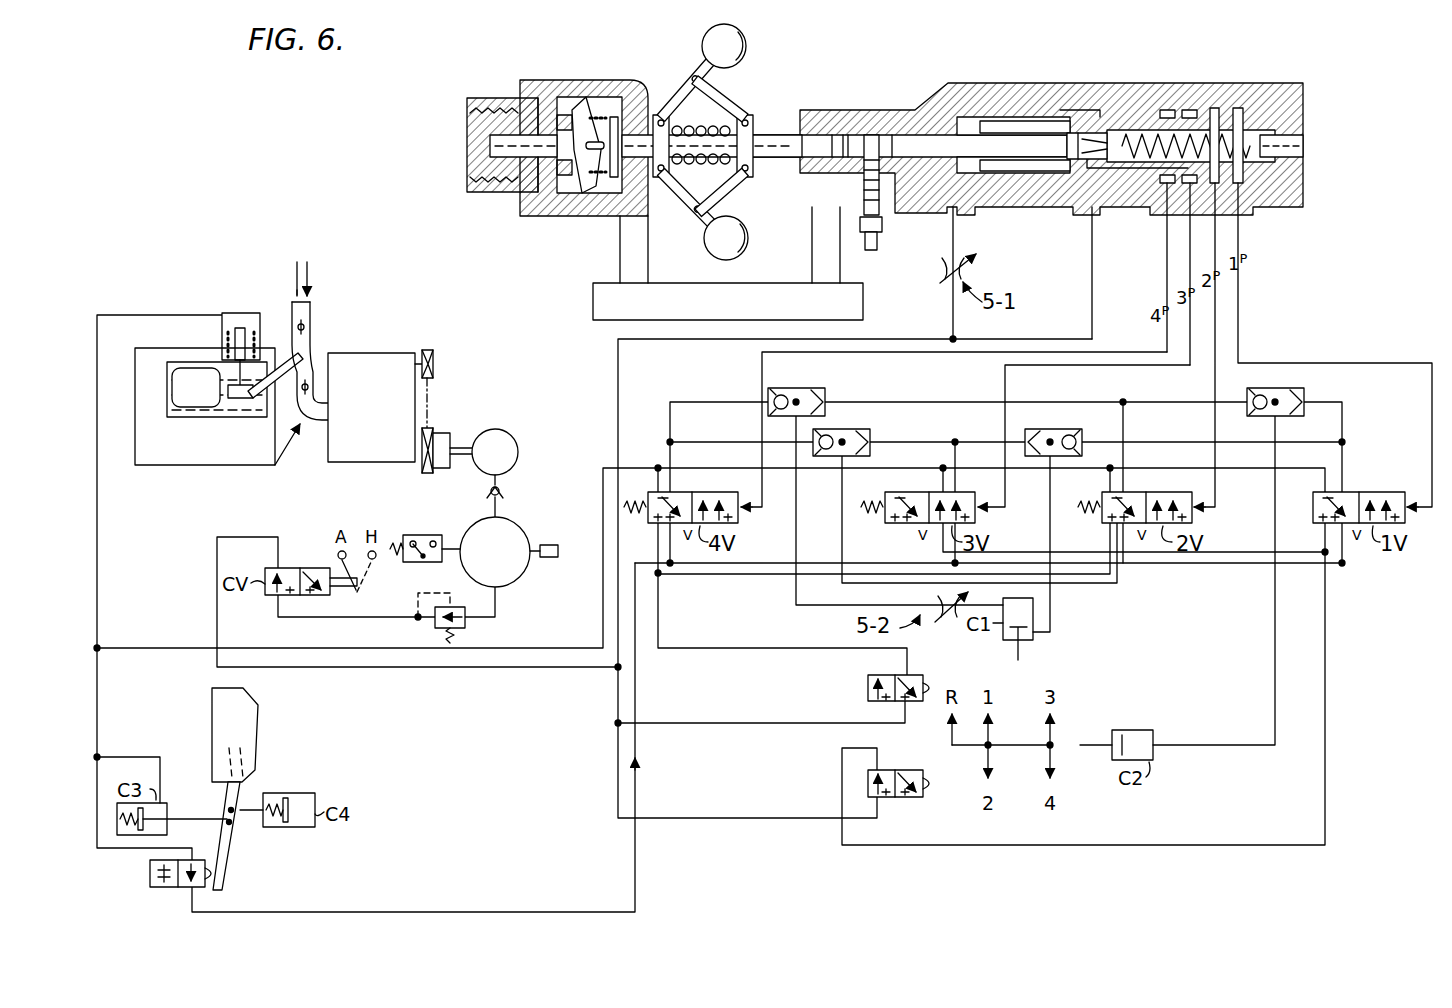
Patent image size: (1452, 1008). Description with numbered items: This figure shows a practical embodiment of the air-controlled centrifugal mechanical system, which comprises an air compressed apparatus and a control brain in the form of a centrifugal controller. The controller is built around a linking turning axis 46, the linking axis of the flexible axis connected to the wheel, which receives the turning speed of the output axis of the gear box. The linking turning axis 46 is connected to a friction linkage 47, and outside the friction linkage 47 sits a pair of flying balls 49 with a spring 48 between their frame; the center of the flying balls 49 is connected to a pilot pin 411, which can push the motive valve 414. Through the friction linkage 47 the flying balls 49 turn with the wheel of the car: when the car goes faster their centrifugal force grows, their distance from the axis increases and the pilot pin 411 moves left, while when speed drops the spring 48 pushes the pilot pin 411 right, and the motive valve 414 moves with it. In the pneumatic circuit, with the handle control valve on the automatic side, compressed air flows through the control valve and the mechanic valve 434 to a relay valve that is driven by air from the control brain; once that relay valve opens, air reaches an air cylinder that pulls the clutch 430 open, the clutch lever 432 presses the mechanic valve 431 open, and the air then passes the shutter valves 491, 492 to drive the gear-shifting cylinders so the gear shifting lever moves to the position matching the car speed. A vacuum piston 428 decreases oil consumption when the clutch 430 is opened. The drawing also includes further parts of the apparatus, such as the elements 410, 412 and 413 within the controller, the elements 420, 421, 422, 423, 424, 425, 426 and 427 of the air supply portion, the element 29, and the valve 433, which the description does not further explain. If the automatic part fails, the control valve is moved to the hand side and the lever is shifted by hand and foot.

The linking turning axis 46 is at (490, 142).
The friction linkage 47 is at (577, 190).
The spring 48 is at (703, 168).
The flying balls 49 is at (700, 46).
The adjusting screw 410 is at (880, 148).
The pilot pin 411 is at (975, 128).
The spool 412 is at (1250, 130).
The piston 413 is at (1068, 122).
The motive valve 414 is at (1105, 107).
The hopper 420 is at (388, 350).
The belt 421 is at (434, 404).
The pulley 422 is at (455, 430).
The compressor 423 is at (513, 431).
The air tank 424 is at (528, 526).
The pressure switch 425 is at (438, 532).
The relief valve 426 is at (432, 624).
The drain 427 is at (568, 563).
The vacuum piston 428 is at (235, 310).
The lever arm 29 is at (283, 356).
The clutch 430 is at (266, 734).
The mechanic valve 431 is at (146, 876).
The clutch lever 432 is at (237, 855).
The valve 433 is at (866, 690).
The mechanic valve 434 is at (885, 798).
The shutter valve 491 is at (1062, 432).
The shutter valve 492 is at (873, 432).